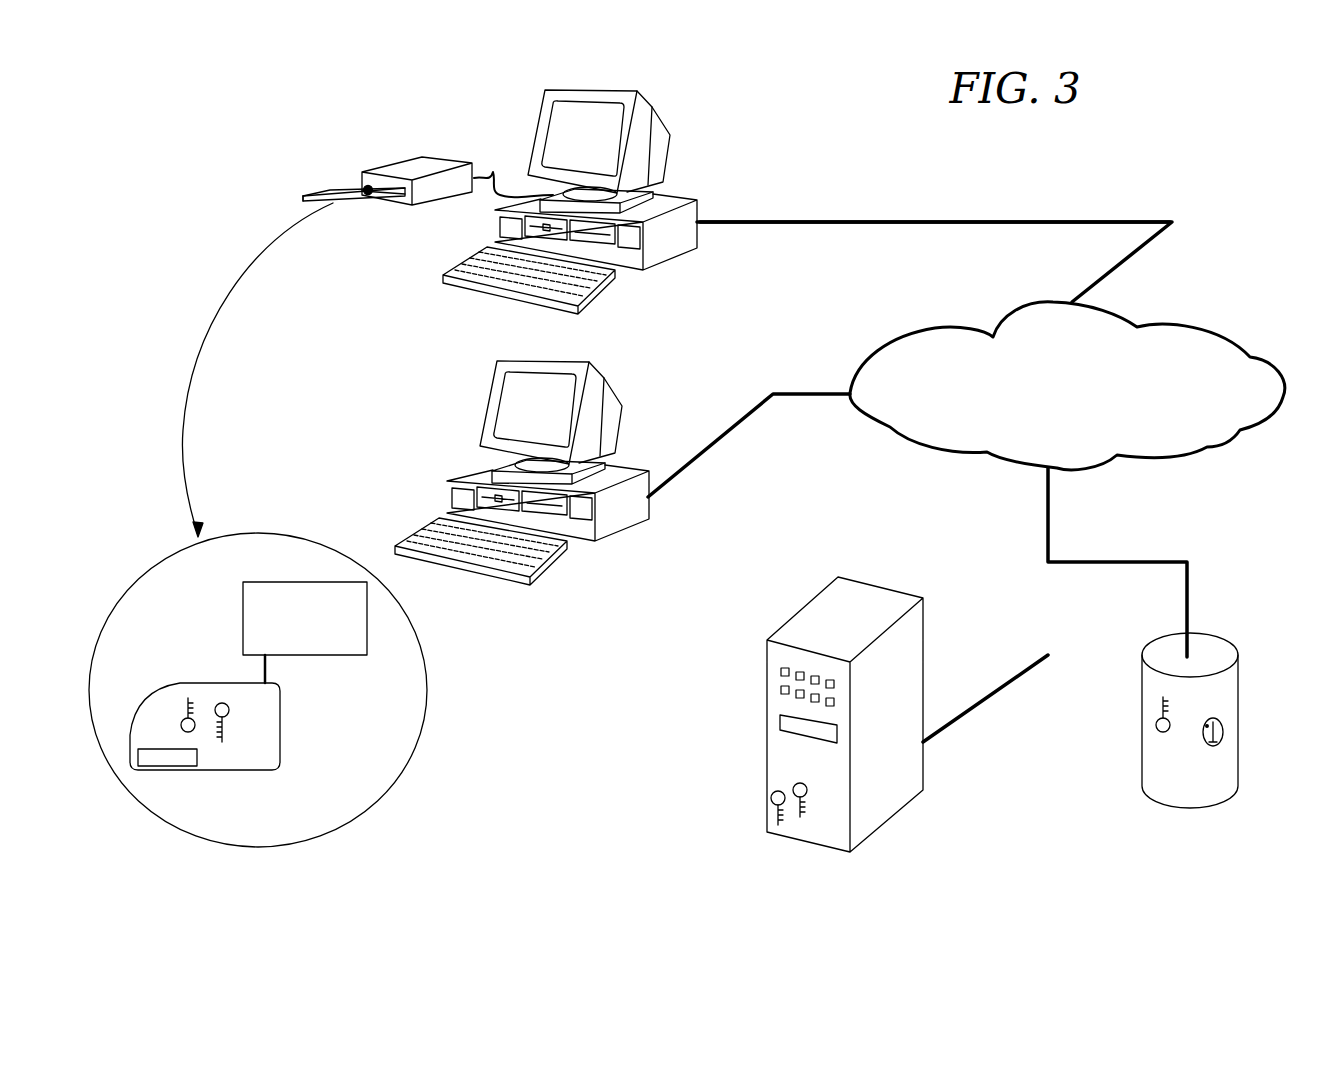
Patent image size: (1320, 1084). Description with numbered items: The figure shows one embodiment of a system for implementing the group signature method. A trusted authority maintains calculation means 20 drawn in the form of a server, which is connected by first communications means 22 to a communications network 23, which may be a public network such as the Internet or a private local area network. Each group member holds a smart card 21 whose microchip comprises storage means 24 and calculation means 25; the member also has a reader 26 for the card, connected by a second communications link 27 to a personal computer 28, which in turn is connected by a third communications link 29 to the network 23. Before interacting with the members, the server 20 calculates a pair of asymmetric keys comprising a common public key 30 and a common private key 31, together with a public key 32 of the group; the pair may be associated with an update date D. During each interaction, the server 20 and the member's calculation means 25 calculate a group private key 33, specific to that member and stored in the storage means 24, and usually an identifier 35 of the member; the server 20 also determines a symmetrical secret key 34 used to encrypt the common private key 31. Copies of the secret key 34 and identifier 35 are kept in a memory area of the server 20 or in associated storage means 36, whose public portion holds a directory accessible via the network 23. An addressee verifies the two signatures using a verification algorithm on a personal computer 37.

The calculation means 20 is at (793, 627).
The smart card 21 is at (357, 200).
The first communications means 22 is at (1046, 600).
The communications network 23 is at (928, 340).
The storage means 24 is at (347, 187).
The calculation means 25 is at (365, 189).
The reader 26 is at (418, 165).
The second communications link 27 is at (493, 172).
The personal computer 28 is at (660, 150).
The third communications link 29 is at (925, 221).
The common public key 30 is at (776, 815).
The common private key 31 is at (222, 750).
The public key of the group 32 is at (780, 722).
The group private key 33 is at (145, 757).
The symmetrical secret key 34 is at (188, 697).
The identifier 35 is at (1224, 731).
The associated storage means 36 is at (1230, 677).
The personal computer 37 is at (613, 417).